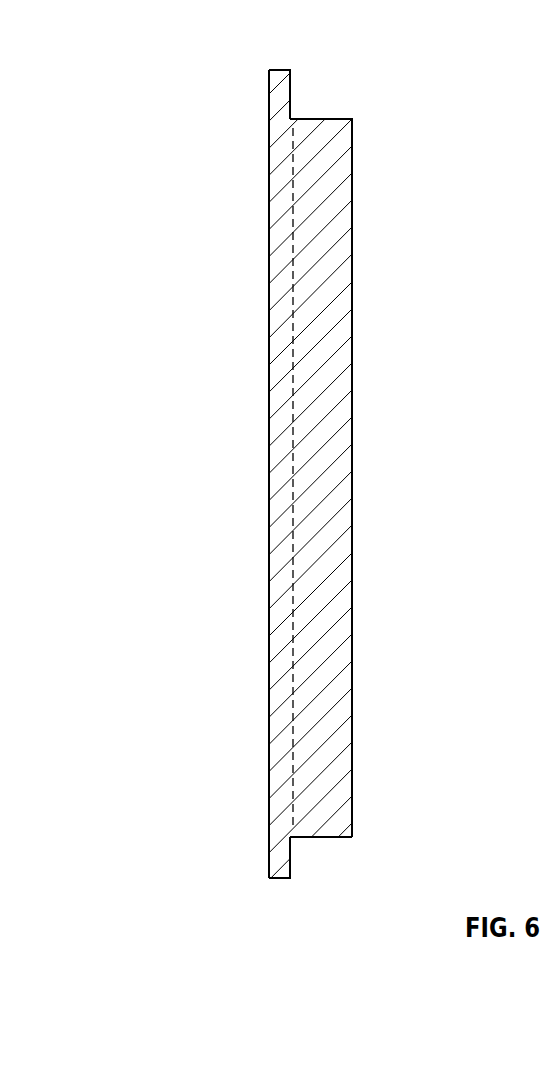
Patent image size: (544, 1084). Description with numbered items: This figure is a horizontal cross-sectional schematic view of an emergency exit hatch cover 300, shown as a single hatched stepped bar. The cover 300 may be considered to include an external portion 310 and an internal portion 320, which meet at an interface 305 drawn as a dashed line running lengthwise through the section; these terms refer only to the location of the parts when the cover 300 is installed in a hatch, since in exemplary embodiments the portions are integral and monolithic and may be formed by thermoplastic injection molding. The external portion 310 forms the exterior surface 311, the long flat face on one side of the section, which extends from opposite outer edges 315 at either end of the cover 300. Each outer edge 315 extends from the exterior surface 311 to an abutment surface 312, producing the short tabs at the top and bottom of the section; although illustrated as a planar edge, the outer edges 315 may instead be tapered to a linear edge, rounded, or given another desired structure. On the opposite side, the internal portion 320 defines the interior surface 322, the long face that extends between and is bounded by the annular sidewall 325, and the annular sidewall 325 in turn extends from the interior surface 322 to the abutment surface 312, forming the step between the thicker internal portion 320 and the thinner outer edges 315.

The cover 300 is at (145, 108).
The interface 305 is at (293, 137).
The external portion 310 is at (282, 321).
The exterior surface 311 is at (268, 503).
The abutment surface 312 is at (291, 90).
The outer edges 315 is at (282, 879).
The internal portion 320 is at (337, 203).
The interior surface 322 is at (353, 388).
The annular sidewall 325 is at (333, 838).